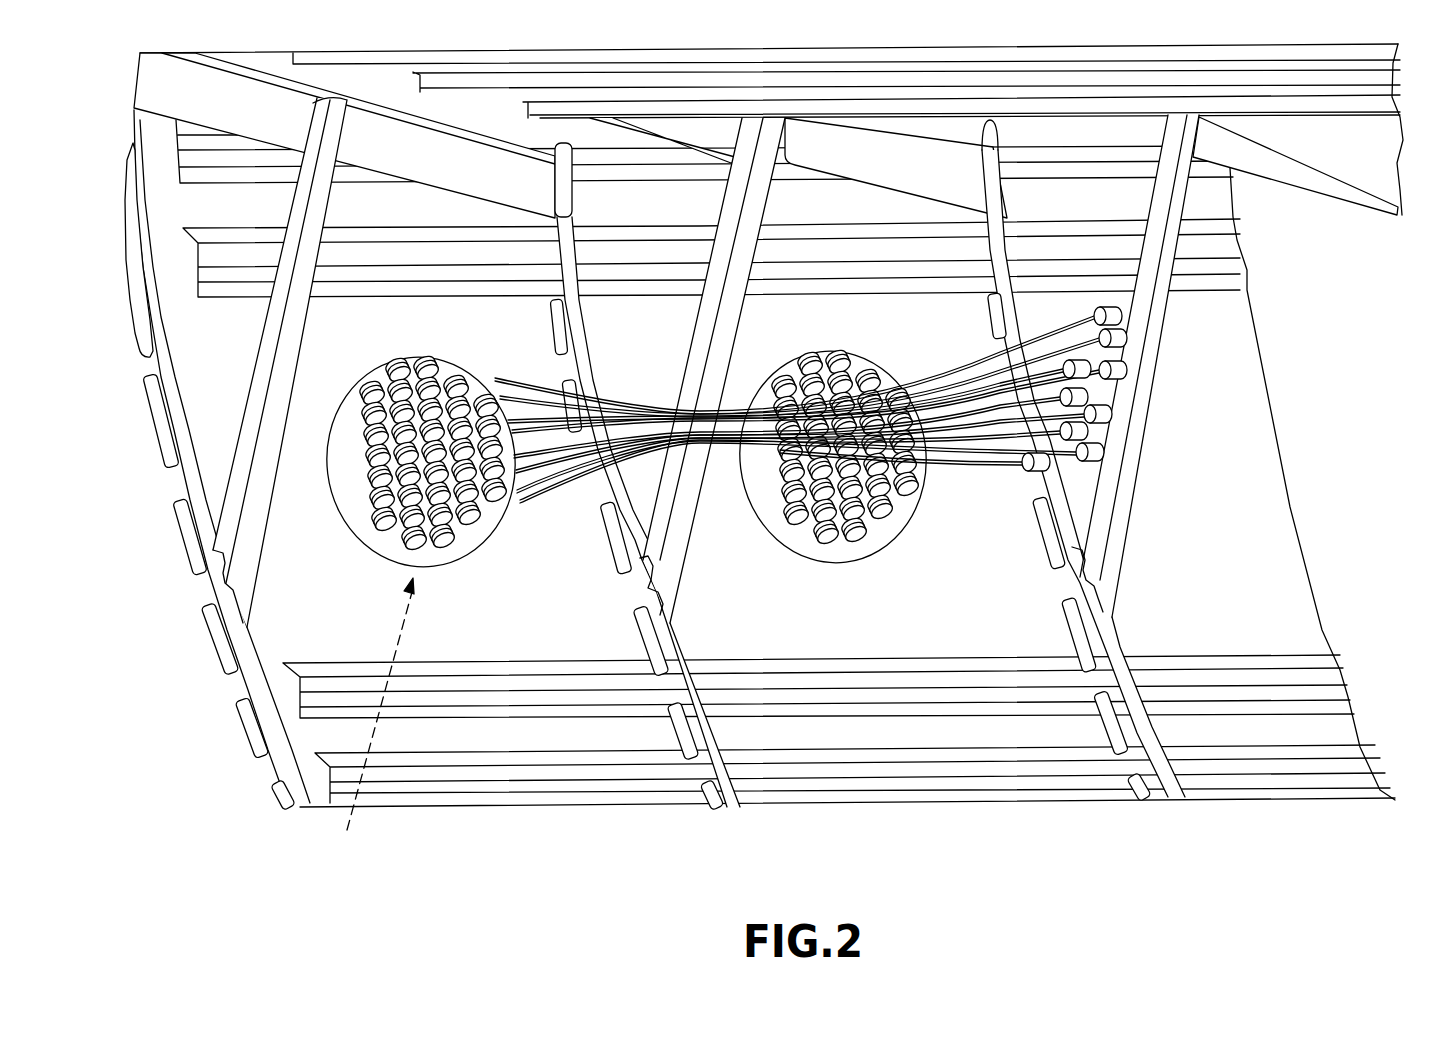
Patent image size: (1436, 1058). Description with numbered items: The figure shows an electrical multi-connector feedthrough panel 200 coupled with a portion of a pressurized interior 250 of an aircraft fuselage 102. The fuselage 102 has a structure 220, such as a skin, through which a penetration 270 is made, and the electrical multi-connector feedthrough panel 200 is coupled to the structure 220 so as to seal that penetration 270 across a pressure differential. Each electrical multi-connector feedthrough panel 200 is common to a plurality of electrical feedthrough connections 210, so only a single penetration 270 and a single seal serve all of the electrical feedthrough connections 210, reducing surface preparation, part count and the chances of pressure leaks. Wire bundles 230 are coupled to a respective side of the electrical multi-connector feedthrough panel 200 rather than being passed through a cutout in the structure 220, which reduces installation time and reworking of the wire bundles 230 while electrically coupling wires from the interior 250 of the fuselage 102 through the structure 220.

The fuselage 102 is at (1288, 558).
The electrical multi-connector feedthrough panel 200 is at (370, 540).
The electrical feedthrough connections 210 is at (321, 463).
The structure 220 is at (1262, 482).
The wire bundles 230 is at (563, 500).
The interior 250 is at (1313, 336).
The penetration 270 is at (367, 724).